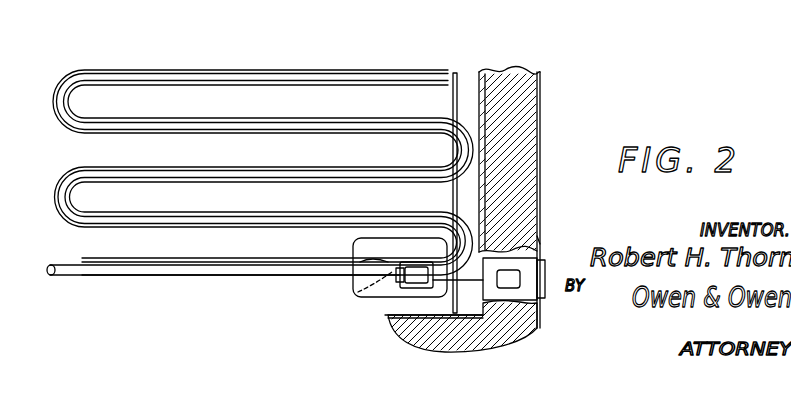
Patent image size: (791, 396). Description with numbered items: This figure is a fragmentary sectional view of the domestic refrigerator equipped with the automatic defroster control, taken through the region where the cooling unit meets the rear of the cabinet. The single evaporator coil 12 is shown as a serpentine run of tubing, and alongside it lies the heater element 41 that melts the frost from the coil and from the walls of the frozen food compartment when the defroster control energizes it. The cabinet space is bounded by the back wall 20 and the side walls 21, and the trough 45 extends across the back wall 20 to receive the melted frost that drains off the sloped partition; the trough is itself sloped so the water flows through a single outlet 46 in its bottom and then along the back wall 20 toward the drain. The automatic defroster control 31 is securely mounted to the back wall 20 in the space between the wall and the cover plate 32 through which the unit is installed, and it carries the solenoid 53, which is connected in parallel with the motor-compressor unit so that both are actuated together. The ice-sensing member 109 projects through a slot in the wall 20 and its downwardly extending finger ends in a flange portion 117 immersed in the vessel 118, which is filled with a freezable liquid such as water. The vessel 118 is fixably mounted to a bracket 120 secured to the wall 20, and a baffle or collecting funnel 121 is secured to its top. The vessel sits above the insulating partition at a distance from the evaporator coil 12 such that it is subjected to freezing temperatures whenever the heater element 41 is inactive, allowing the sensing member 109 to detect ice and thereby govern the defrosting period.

The heater element 41 is at (298, 70).
The evaporator coil 12 is at (160, 277).
The trough 45 is at (461, 74).
The back wall 20 is at (483, 155).
The flange portion 117 is at (398, 263).
The baffle or collecting funnel 121 is at (357, 284).
The vessel 118 is at (352, 303).
The bracket 120 is at (392, 300).
The ice-sensing member 109 is at (452, 297).
The solenoid 53 is at (513, 283).
The cover plate 32 is at (541, 259).
The automatic defroster control 31 is at (538, 239).
The side wall 21 is at (387, 318).
The outlet 46 is at (462, 331).